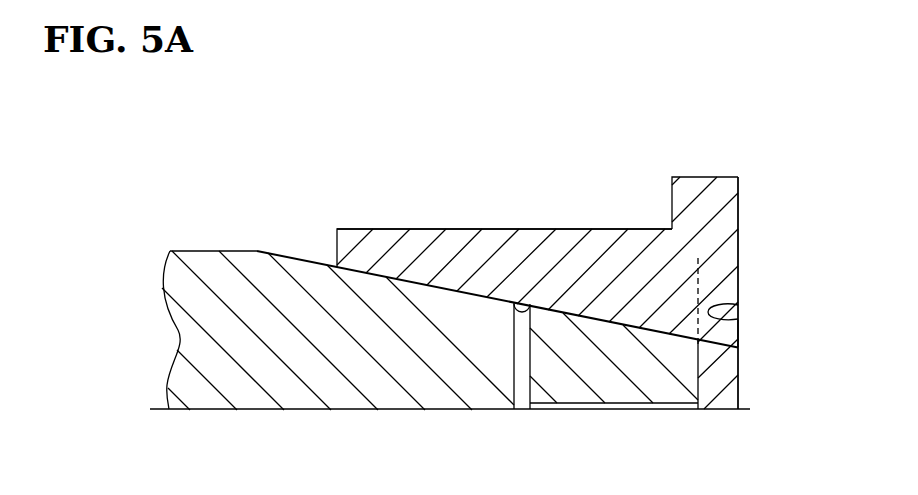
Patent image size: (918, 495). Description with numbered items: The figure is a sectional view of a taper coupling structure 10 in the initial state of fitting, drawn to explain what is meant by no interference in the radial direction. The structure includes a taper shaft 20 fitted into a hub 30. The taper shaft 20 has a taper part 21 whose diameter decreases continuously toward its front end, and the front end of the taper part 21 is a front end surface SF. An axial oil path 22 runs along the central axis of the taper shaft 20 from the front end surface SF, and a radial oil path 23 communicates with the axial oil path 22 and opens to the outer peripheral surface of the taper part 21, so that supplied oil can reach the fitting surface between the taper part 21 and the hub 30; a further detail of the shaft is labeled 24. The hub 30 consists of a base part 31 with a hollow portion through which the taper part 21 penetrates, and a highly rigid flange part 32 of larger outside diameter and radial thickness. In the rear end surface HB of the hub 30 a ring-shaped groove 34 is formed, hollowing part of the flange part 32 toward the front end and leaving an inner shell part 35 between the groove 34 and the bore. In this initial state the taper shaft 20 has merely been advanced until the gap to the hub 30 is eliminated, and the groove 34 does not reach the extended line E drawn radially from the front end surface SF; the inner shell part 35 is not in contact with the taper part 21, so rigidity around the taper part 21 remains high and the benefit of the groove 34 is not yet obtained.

The taper coupling structure 10 is at (336, 175).
The taper shaft 20 is at (235, 240).
The taper part 21 is at (306, 258).
The axial oil path 22 is at (678, 409).
The radial oil path 23 is at (522, 348).
The groove 24 is at (522, 303).
The hub 30 is at (378, 220).
The base part 31 is at (418, 229).
The flange part 32 is at (691, 177).
The groove 34 is at (736, 310).
The inner shell part 35 is at (740, 333).
The rear end surface HB is at (738, 212).
The front end surface SF is at (700, 395).
The extended line E is at (690, 283).